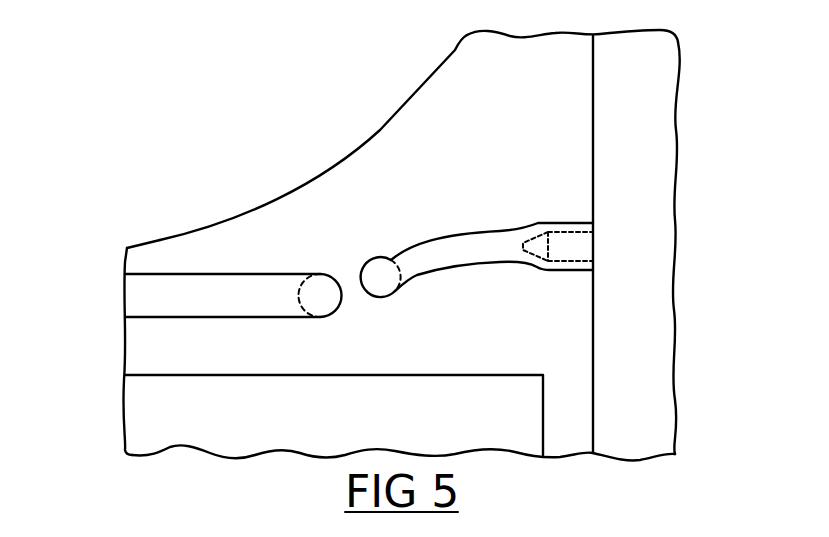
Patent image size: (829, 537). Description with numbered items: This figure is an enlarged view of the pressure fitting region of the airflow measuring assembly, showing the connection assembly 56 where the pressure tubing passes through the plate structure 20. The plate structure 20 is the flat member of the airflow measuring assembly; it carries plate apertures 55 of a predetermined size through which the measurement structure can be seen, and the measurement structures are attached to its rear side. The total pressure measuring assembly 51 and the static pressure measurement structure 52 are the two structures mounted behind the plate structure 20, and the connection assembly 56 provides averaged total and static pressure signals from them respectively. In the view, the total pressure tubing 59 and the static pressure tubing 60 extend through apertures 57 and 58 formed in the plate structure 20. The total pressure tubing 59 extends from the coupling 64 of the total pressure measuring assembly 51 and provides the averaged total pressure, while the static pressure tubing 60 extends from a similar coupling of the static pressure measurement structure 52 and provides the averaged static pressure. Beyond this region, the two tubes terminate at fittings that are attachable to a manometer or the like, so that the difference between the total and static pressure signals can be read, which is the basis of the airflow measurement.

The plate structure 20 is at (158, 258).
The total pressure measuring assembly 51 is at (652, 108).
The static pressure measurement structure 52 is at (156, 420).
The plate apertures 55 is at (160, 240).
The connection assembly 56 is at (328, 236).
The aperture 57 is at (372, 268).
The aperture 58 is at (318, 275).
The total pressure tubing 59 is at (500, 232).
The static pressure tubing 60 is at (183, 280).
The coupling 64 is at (577, 232).